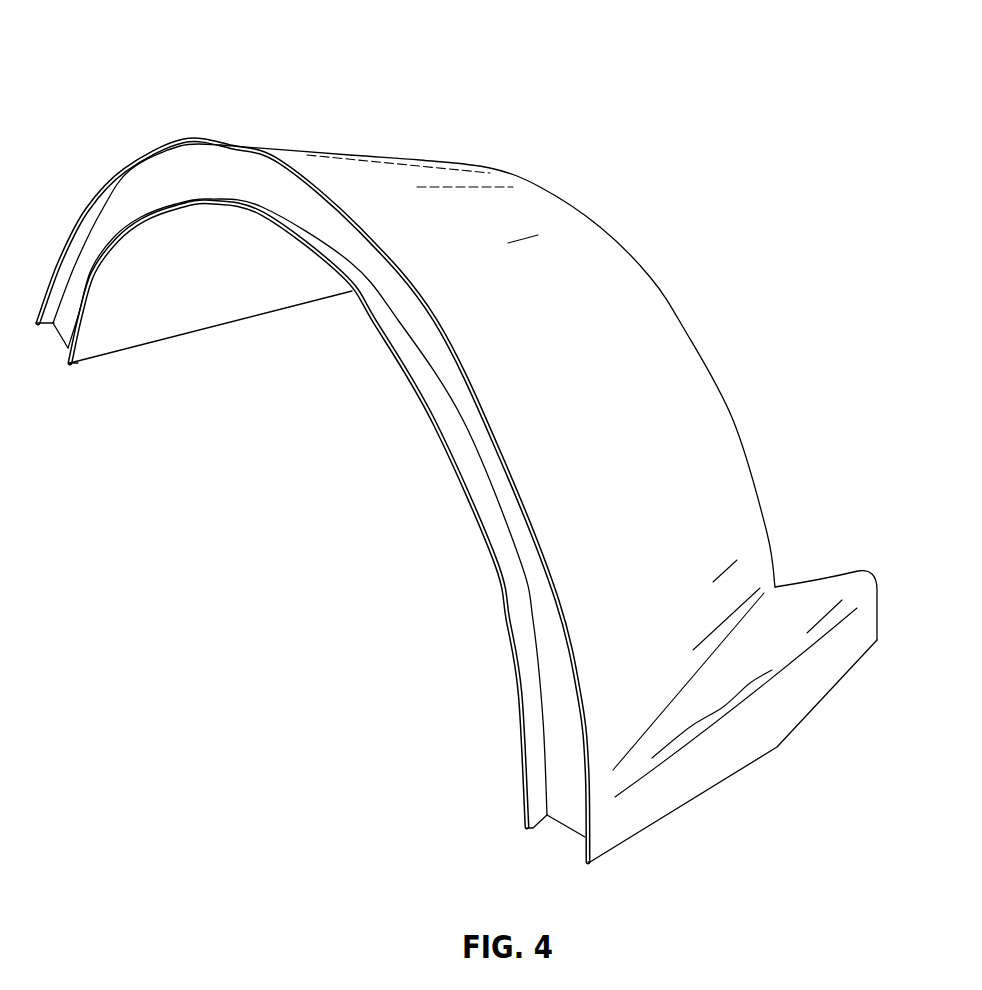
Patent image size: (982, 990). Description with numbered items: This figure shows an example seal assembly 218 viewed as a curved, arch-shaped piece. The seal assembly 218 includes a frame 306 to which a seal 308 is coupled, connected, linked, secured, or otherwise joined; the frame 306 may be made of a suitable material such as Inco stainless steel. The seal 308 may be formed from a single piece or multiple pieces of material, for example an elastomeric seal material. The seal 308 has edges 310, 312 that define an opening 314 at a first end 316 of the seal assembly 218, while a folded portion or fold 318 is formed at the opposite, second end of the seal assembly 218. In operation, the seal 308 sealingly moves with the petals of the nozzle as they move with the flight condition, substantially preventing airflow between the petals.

The seal assembly 218 is at (567, 188).
The frame 306 is at (278, 200).
The seal 308 is at (655, 350).
The edge 310 is at (312, 243).
The edge 312 is at (194, 138).
The opening 314 is at (398, 350).
The first end 316 is at (498, 587).
The fold 318 is at (732, 445).